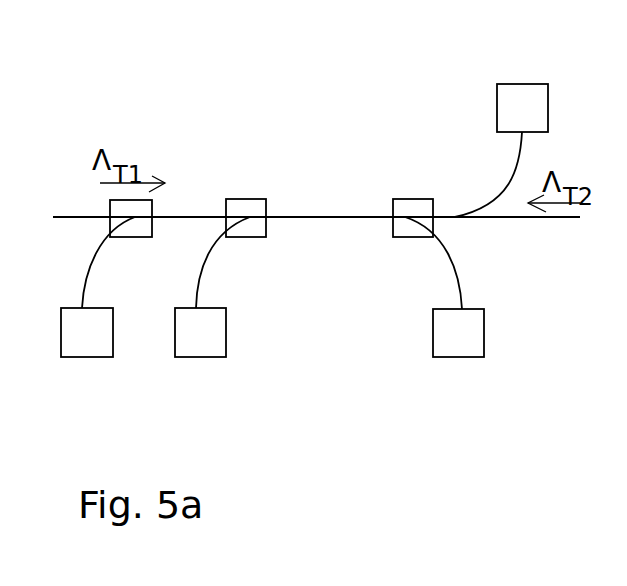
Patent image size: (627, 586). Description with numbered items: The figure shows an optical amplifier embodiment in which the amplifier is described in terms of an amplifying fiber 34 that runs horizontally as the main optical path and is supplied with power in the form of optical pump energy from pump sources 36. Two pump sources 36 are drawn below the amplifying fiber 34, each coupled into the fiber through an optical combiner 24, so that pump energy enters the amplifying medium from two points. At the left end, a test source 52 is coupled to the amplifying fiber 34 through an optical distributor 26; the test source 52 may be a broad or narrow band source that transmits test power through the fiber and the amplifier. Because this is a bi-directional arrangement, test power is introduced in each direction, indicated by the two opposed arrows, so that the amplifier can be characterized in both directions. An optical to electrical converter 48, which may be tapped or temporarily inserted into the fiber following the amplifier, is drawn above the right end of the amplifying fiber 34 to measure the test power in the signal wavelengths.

The optical combiner 24 is at (242, 238).
The optical distributor 26 is at (128, 238).
The amplifying fiber 34 is at (325, 216).
The pump source 36 is at (196, 357).
The optical to electrical converter 48 is at (530, 83).
The test source 52 is at (80, 357).